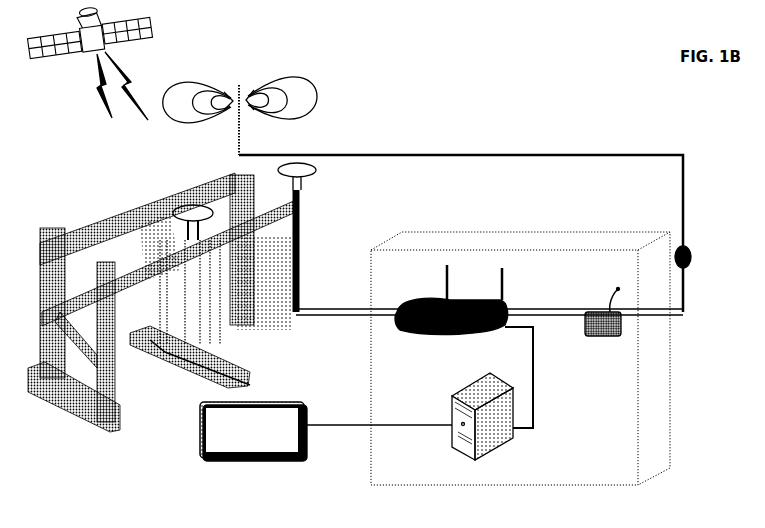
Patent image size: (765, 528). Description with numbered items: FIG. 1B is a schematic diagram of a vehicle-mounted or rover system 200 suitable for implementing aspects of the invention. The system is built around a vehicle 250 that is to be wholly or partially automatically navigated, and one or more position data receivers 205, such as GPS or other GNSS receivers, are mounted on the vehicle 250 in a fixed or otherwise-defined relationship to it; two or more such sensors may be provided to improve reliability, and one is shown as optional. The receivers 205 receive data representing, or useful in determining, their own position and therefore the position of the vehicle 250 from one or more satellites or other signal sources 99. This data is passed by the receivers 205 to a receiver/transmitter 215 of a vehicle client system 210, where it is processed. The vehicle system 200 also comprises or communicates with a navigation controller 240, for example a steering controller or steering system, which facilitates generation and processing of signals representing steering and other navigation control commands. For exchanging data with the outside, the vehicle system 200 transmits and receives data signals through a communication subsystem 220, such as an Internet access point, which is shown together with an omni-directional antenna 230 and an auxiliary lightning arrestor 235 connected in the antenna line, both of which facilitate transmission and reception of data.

The vehicle system 200 is at (499, 252).
The satellite 99 is at (88, 60).
The position data receiver 205 is at (191, 206).
The vehicle client system 210 is at (473, 428).
The receiver/transmitter 215 is at (463, 346).
The communication subsystem 220 is at (584, 343).
The omni-directional antenna 230 is at (286, 112).
The lightning arrestor 235 is at (712, 271).
The navigation controller 240 is at (286, 431).
The vehicle 250 is at (62, 258).